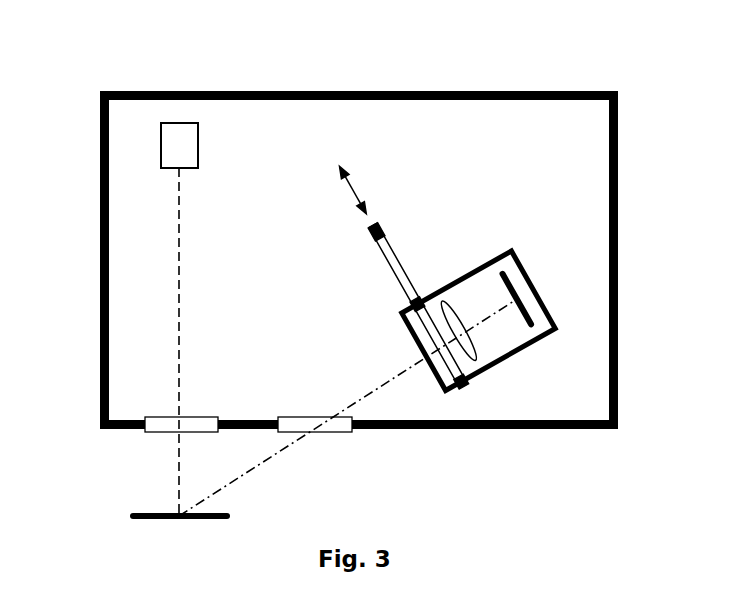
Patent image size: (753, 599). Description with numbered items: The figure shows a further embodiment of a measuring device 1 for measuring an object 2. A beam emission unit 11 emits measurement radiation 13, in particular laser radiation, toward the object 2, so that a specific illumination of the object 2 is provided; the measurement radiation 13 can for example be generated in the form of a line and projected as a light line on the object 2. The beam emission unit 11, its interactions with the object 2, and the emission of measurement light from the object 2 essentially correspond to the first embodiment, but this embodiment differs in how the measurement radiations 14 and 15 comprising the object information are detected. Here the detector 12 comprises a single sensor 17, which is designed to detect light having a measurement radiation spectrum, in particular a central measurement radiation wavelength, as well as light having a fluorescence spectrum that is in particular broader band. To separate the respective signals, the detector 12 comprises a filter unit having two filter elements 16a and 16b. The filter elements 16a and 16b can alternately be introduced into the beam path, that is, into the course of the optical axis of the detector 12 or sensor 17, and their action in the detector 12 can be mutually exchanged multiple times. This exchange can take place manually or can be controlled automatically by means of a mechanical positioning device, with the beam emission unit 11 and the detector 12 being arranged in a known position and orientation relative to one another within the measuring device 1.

The measuring device 1 is at (359, 213).
The object 2 is at (156, 486).
The beam emission unit 11 is at (141, 107).
The detector 12 is at (564, 293).
The measurement radiation 13 is at (103, 342).
The measurement radiation 14 is at (348, 408).
The measurement radiation 15 is at (348, 407).
The filter element 16a is at (494, 441).
The filter element 16b is at (437, 216).
The sensor 17 is at (547, 328).